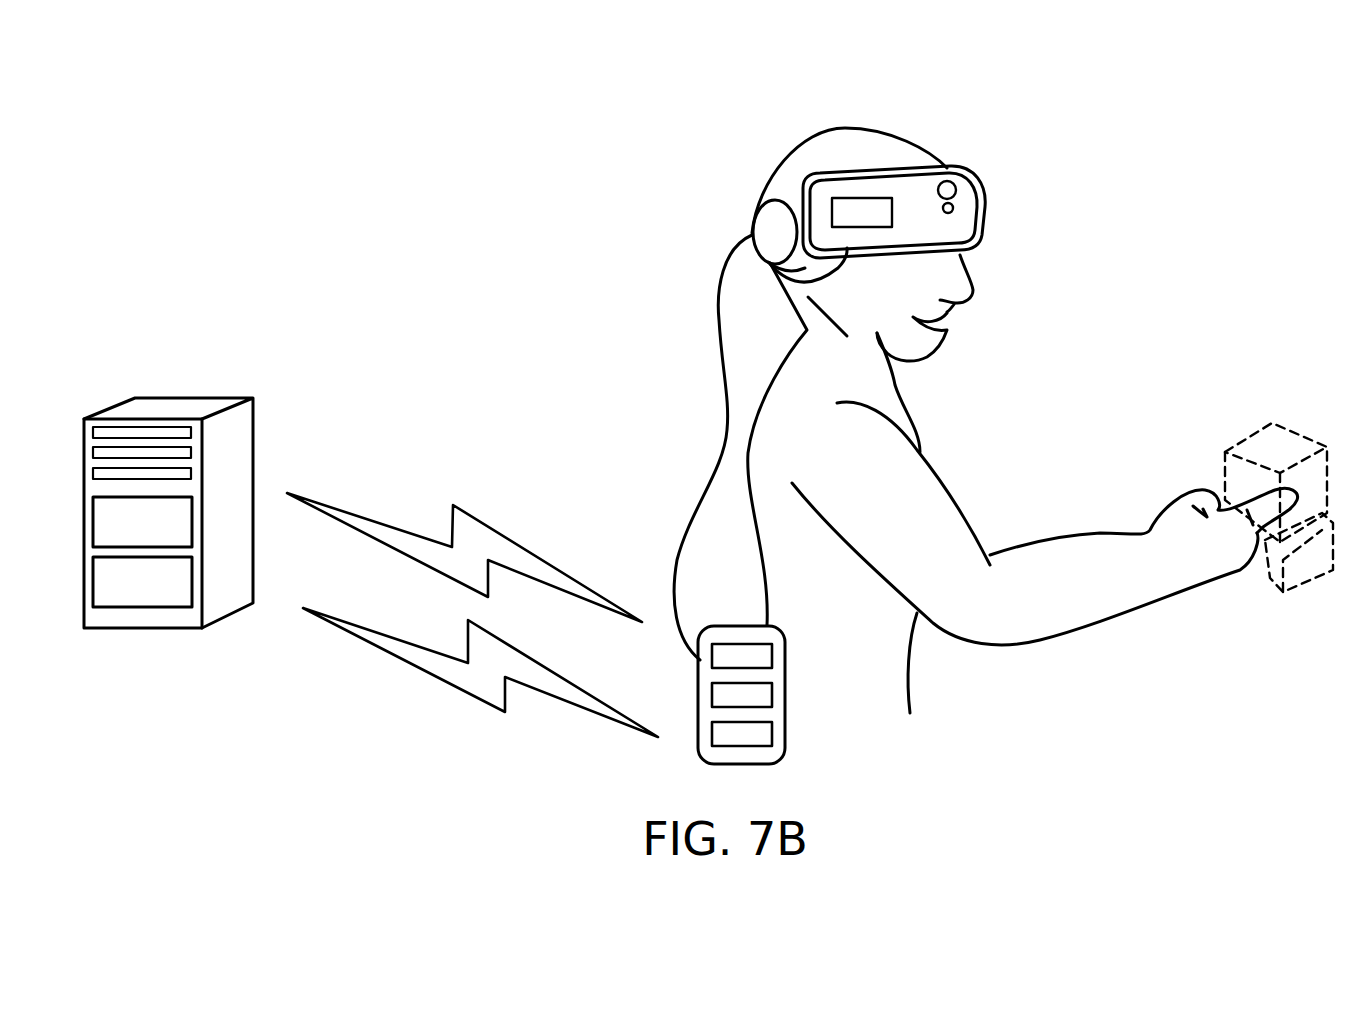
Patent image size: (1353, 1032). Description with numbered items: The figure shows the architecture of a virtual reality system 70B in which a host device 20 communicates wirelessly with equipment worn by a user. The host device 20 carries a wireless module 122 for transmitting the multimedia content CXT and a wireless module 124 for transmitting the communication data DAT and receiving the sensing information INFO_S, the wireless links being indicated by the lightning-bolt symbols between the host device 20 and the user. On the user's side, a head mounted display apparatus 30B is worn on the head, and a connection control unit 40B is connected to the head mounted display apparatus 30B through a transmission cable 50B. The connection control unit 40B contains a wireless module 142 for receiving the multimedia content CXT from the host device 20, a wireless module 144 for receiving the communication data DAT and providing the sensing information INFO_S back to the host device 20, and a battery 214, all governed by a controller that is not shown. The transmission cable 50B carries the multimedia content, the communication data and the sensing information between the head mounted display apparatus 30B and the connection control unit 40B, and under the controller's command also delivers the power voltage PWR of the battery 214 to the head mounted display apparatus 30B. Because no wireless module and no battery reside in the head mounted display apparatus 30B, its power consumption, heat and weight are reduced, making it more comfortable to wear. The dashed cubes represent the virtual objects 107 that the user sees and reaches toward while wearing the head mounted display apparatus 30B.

The host device 20 is at (168, 552).
The wireless module 122 is at (168, 538).
The wireless module 124 is at (168, 597).
The head mounted display apparatus 30B is at (967, 170).
The transmission cable 50B is at (718, 336).
The connection control unit 40B is at (791, 710).
The wireless module 142 is at (773, 655).
The wireless module 144 is at (773, 694).
The battery 214 is at (773, 732).
The virtual objects 107 is at (1250, 437).
The virtual reality system 70B is at (969, 428).